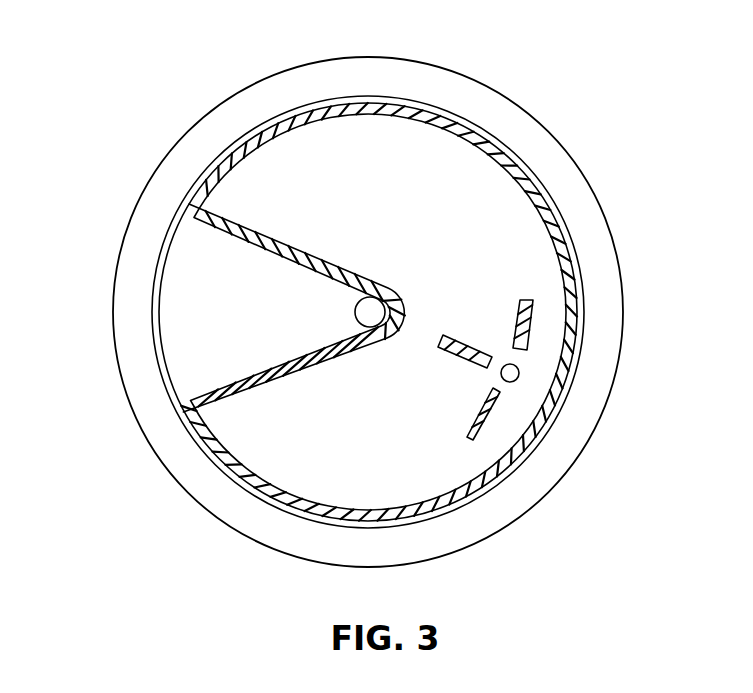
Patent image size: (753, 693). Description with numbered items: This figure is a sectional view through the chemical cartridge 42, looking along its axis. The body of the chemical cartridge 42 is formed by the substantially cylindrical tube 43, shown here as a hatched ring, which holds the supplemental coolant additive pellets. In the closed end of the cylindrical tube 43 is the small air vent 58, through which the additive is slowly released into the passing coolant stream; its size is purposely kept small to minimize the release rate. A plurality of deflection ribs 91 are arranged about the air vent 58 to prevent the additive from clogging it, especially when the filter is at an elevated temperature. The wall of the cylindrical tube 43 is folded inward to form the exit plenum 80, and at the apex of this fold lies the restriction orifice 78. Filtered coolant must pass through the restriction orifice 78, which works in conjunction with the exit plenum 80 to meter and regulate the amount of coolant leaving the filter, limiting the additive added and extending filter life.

The chemical cartridge 42 is at (620, 124).
The cylindrical tube 43 is at (482, 137).
The air vent 58 is at (517, 378).
The restriction orifice 78 is at (362, 309).
The exit plenum 80 is at (183, 353).
The deflection ribs 91 is at (515, 325).